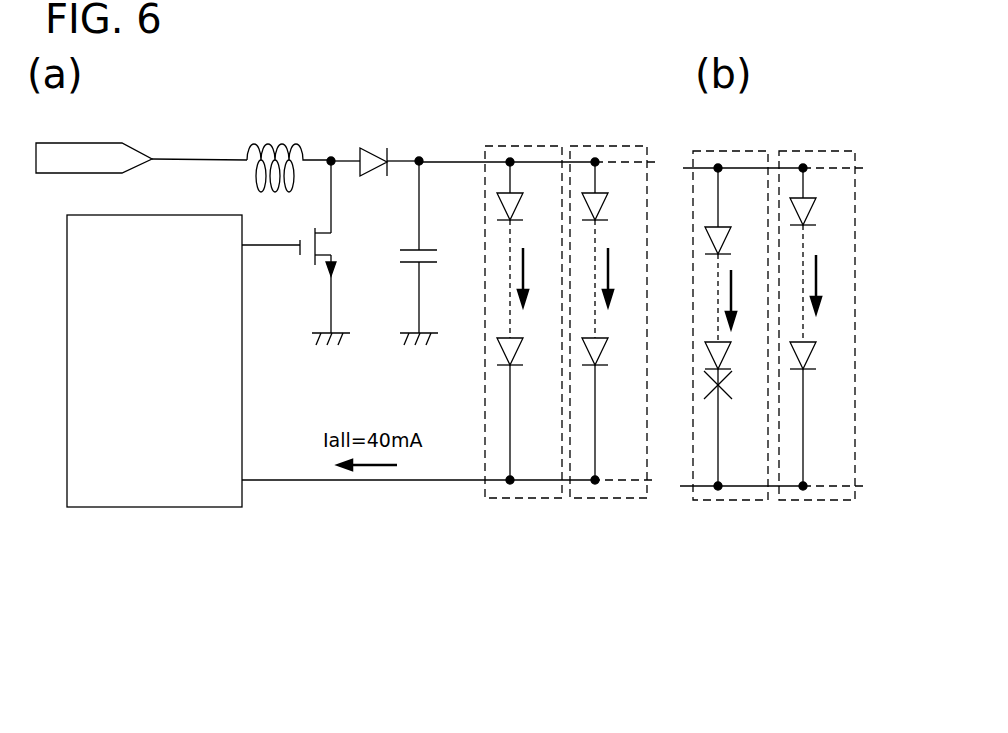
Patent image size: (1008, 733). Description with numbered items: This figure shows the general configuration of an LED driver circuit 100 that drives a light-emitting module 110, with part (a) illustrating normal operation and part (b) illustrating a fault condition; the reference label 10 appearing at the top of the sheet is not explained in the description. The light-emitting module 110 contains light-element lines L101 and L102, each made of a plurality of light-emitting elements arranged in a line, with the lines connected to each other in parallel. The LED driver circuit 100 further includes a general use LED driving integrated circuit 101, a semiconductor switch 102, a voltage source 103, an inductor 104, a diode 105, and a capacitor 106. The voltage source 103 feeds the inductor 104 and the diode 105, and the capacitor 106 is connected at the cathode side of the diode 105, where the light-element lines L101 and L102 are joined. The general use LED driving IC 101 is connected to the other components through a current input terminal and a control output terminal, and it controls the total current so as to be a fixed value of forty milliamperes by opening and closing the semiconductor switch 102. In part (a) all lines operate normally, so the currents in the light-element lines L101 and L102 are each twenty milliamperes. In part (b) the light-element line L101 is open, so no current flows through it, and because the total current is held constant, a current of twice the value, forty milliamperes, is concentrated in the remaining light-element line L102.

The lighting device 10 is at (450, 300).
The LED driver circuit 100 is at (455, 100).
The general use LED driving integrated circuit 101 is at (150, 507).
The semiconductor switch 102 is at (304, 265).
The voltage source 103 is at (86, 143).
The inductor 104 is at (275, 128).
The diode 105 is at (366, 148).
The capacitor 106 is at (410, 253).
The light-emitting module 110 is at (642, 556).
The light-element line L101 is at (520, 500).
The light-element line L102 is at (605, 500).